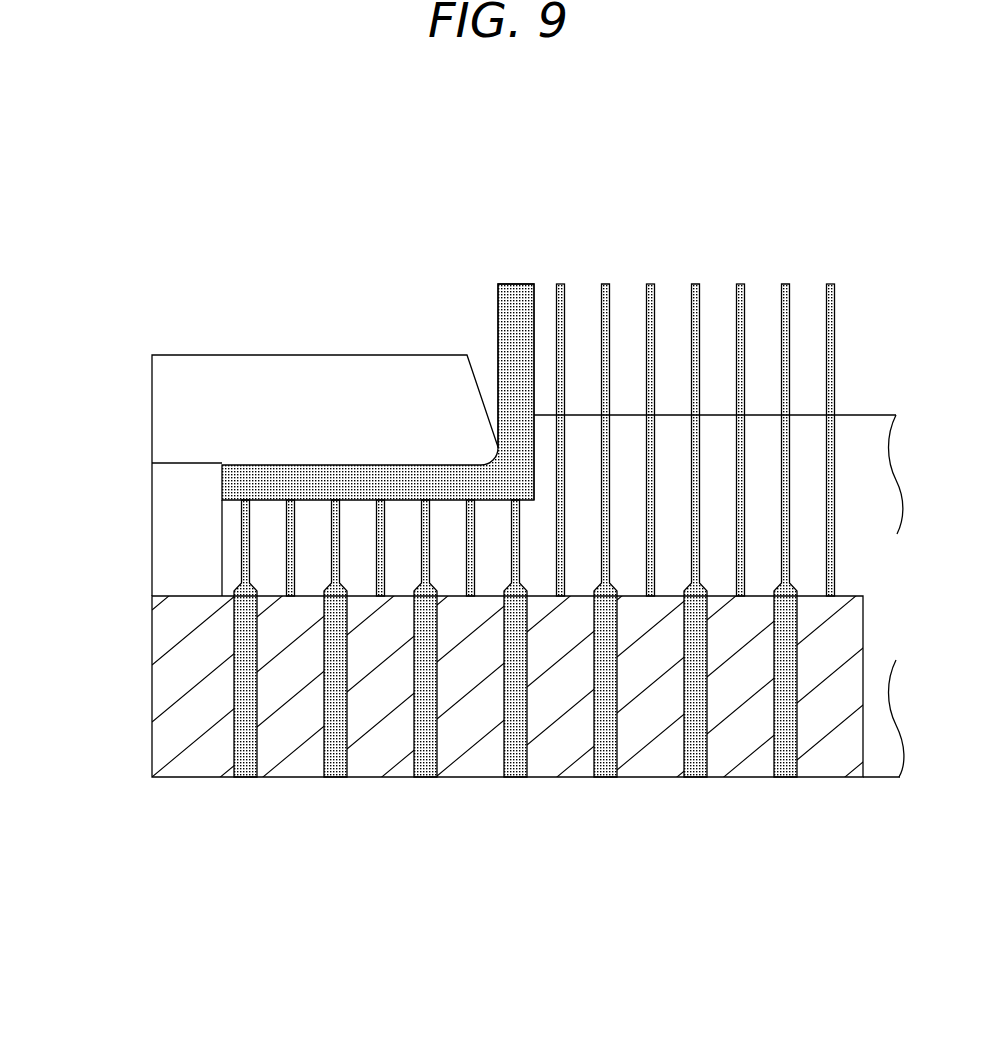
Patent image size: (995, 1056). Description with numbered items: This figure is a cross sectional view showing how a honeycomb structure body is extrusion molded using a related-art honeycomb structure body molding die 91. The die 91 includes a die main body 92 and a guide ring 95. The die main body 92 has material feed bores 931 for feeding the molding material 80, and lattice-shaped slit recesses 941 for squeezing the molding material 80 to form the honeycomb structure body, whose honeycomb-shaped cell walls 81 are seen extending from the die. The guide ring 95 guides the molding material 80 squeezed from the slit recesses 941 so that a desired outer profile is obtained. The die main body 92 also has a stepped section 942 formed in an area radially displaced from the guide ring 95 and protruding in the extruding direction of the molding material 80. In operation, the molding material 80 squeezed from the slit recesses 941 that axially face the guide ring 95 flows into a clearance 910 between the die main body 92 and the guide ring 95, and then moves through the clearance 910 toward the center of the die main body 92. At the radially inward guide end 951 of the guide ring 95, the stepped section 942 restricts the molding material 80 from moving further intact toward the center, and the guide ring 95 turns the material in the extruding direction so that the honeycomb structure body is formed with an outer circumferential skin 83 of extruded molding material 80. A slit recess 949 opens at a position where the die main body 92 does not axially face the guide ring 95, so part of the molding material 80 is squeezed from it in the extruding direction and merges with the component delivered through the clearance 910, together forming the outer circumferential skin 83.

The honeycomb structure body molding die 91 is at (285, 403).
The guide ring 95 is at (234, 392).
The molding material 80 is at (291, 490).
The slit recesses 941 is at (296, 520).
The clearance 910 is at (378, 304).
The radially inward guide end 951 is at (510, 340).
The outer circumferential skin 83 is at (490, 304).
The cell walls 81 is at (605, 343).
The stepped section 942 is at (716, 441).
The die main body 92 is at (146, 617).
The slit recess 949 is at (504, 543).
The material feed bores 931 is at (685, 720).